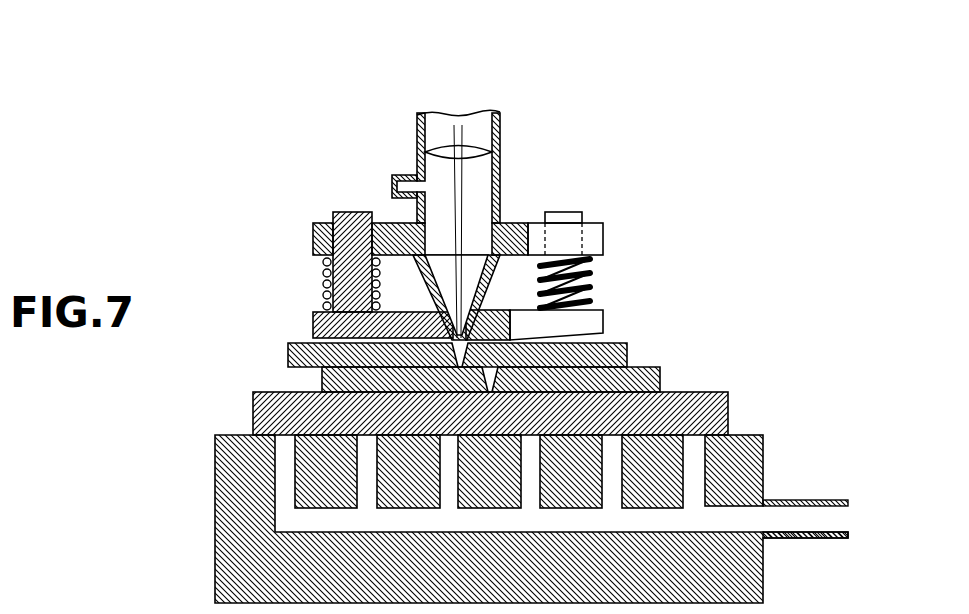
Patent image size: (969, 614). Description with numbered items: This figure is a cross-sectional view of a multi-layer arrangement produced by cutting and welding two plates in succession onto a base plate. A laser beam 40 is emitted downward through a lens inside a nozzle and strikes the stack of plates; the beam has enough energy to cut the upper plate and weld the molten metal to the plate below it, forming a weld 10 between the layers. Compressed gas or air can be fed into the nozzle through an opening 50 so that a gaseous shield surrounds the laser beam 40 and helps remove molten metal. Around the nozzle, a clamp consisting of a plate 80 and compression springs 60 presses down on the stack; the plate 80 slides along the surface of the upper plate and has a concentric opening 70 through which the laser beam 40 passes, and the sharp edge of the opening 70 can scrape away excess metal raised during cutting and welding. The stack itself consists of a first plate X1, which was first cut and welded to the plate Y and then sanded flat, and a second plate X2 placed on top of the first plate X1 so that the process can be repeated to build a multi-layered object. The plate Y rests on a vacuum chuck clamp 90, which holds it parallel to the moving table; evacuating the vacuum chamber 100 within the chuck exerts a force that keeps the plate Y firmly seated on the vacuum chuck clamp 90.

The weld 10 is at (433, 307).
The laser beam 40 is at (467, 122).
The opening of the nozzle 50 is at (392, 185).
The compression springs 60 is at (327, 275).
The opening 70 is at (482, 313).
The plate 80 is at (313, 327).
The vacuum chuck clamp 90 is at (763, 468).
The vacuum chamber 100 is at (848, 515).
The first plate X1 is at (680, 370).
The second plate X2 is at (632, 347).
The plate Y is at (728, 412).